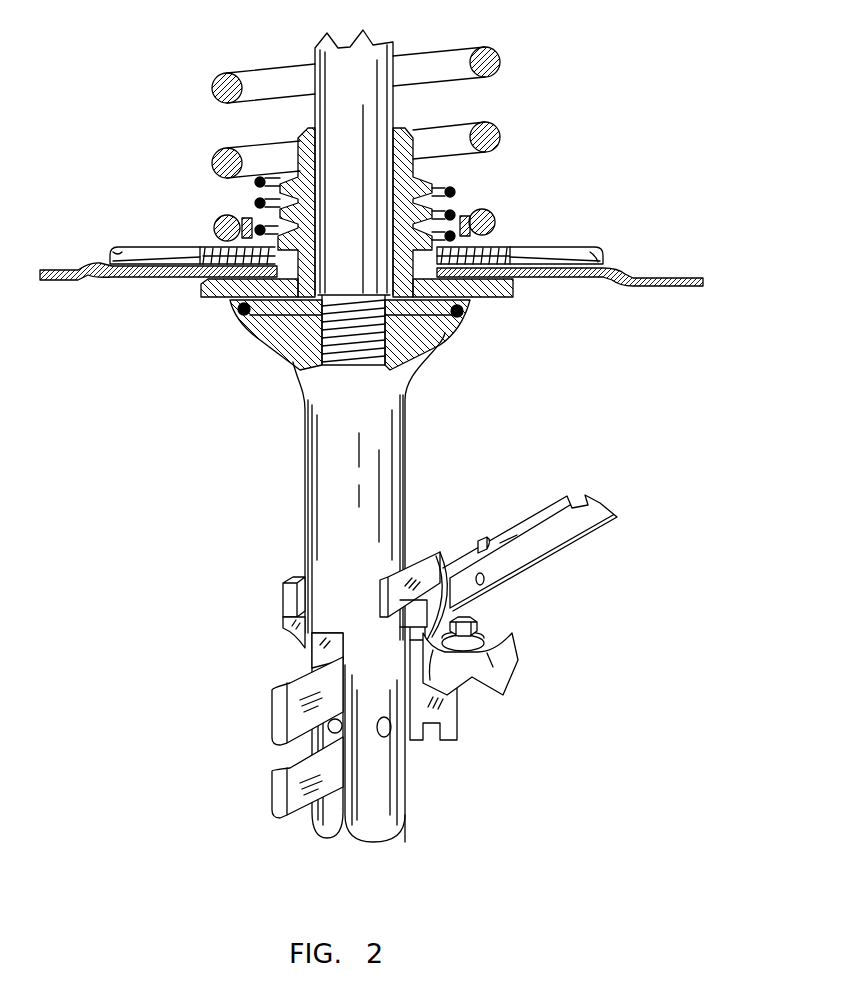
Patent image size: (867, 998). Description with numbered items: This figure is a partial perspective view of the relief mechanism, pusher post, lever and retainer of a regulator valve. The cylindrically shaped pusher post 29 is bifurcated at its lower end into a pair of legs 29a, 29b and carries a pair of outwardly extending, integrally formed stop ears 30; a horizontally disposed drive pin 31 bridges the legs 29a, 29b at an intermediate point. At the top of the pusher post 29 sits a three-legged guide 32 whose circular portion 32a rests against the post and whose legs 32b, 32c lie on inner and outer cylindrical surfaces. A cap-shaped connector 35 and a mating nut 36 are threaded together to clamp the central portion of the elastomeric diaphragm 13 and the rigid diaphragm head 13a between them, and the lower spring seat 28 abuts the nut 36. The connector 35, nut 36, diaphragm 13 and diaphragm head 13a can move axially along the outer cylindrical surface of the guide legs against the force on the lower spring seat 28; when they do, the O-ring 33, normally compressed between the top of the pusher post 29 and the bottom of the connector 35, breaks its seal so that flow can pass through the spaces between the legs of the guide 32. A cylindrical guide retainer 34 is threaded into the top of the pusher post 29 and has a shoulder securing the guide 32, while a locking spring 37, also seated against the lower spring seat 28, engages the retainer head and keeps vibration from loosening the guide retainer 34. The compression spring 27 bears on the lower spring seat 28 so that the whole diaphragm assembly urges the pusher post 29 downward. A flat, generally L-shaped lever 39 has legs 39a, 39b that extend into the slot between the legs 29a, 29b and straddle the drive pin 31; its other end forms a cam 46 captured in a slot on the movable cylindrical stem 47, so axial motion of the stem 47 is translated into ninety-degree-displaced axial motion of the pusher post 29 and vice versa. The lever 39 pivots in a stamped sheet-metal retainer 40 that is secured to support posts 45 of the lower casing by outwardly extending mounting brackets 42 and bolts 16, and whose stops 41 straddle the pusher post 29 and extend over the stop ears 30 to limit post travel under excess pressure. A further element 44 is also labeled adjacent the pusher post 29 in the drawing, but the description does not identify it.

The diaphragm 13 is at (633, 287).
The diaphragm head 13a is at (575, 250).
The bolts 16 is at (480, 624).
The compression spring 27 is at (503, 66).
The lower spring seat 28 is at (243, 218).
The pusher post 29 is at (405, 425).
The leg 29a is at (395, 832).
The leg 29b is at (333, 840).
The stop ears 30 is at (283, 625).
The drive pin 31 is at (390, 740).
The three-legged guide 32 is at (331, 349).
The circular portion 32a is at (272, 332).
The leg 32b is at (297, 135).
The leg 32c is at (410, 135).
The O-ring 33 is at (467, 317).
The guide retainer 34 is at (393, 48).
The connector 35 is at (203, 290).
The nut 36 is at (517, 250).
The locking spring 37 is at (457, 195).
The lever 39 is at (270, 747).
The leg 39a is at (270, 720).
The leg 39b is at (270, 805).
The retainer 40 is at (461, 719).
The stops 41 is at (287, 582).
The mounting brackets 42 is at (490, 636).
The block 44 is at (312, 662).
The support posts 45 is at (515, 675).
The cam 46 is at (485, 539).
The stem 47 is at (572, 545).